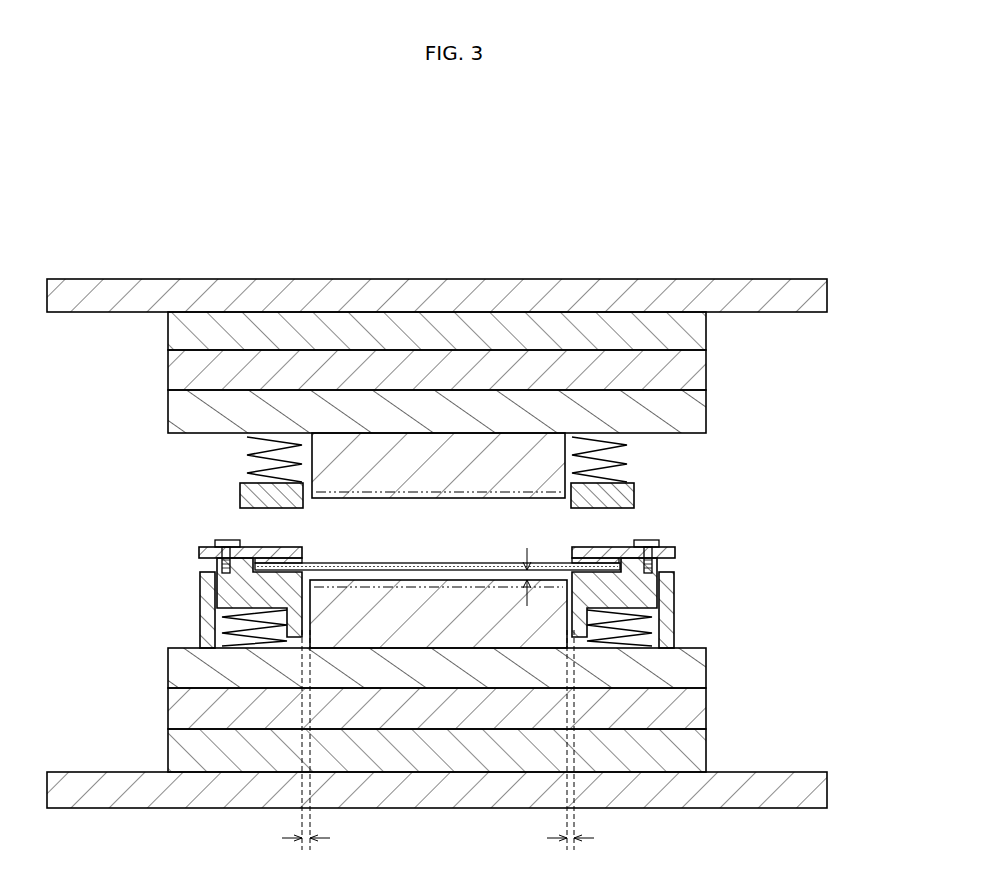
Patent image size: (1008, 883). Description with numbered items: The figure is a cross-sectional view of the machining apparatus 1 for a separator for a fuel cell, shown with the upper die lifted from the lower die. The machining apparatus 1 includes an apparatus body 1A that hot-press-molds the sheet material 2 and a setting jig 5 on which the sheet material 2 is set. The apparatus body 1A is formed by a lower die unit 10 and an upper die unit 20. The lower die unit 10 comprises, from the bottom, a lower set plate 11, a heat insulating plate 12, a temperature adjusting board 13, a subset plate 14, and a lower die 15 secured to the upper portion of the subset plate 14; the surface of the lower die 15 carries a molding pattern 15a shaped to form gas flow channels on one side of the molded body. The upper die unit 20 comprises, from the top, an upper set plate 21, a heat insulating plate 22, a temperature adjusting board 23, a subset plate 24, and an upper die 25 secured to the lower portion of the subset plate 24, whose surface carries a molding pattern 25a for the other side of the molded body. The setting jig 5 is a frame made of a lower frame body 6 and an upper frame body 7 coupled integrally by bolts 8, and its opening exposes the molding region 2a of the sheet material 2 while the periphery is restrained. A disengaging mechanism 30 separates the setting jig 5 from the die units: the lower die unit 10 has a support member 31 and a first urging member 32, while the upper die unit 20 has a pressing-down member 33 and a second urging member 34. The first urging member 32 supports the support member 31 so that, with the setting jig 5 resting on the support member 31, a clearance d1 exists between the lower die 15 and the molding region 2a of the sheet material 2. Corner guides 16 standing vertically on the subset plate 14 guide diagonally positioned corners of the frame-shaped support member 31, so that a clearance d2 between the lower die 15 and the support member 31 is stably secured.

The machining apparatus for a separator for a fuel cell 1 is at (235, 183).
The apparatus body 1A is at (829, 422).
The sheet material 2 is at (322, 567).
The molding region 2a is at (450, 568).
The setting jig 5 is at (762, 522).
The lower frame body 6 is at (658, 568).
The upper frame body 7 is at (668, 552).
The bolt 8 is at (655, 543).
The lower die unit 10 is at (727, 712).
The lower set plate 11 is at (648, 797).
The heat insulating plate 12 is at (165, 751).
The temperature adjusting board 13 is at (165, 710).
The subset plate 14 is at (165, 666).
The lower die 15 is at (403, 597).
The molding pattern 15a is at (348, 578).
The corner guide 16 is at (676, 605).
The upper die unit 20 is at (733, 384).
The upper set plate 21 is at (663, 287).
The heat insulating plate 22 is at (165, 337).
The temperature adjusting board 23 is at (165, 374).
The subset plate 24 is at (165, 414).
The upper die 25 is at (385, 472).
The molding pattern 25a is at (546, 498).
The disengaging mechanism 30 is at (118, 450).
The support member 31 is at (237, 593).
The first urging member 32 is at (237, 635).
The pressing-down member 33 is at (240, 497).
The second urging member 34 is at (245, 460).
The clearance d1 is at (526, 562).
The clearance d2 is at (438, 754).